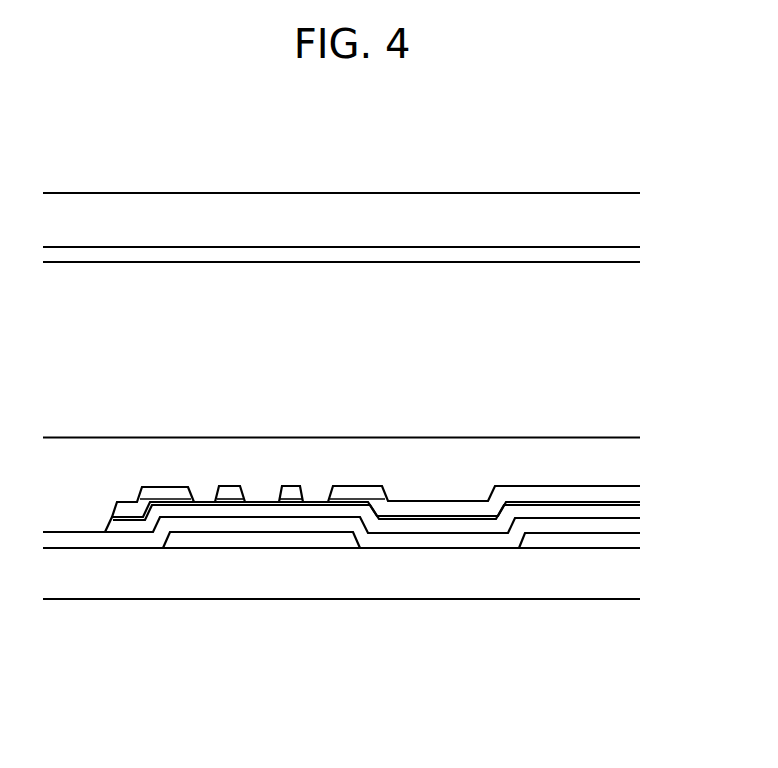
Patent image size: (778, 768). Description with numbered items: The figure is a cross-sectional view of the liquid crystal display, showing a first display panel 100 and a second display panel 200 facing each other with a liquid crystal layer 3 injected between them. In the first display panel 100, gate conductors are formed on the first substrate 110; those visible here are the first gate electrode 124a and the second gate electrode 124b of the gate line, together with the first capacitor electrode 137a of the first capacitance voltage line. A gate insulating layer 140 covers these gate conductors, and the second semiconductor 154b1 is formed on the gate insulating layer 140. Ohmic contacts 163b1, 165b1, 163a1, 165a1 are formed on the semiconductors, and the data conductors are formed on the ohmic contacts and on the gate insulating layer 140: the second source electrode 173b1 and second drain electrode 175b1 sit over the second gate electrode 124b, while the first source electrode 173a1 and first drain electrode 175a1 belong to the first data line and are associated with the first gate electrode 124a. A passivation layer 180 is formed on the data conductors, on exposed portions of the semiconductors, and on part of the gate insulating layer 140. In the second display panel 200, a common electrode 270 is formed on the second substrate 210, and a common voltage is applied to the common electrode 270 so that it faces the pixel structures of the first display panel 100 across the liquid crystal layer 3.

The liquid crystal layer 3 is at (651, 277).
The first display panel 100 is at (651, 487).
The first substrate 110 is at (605, 583).
The first gate electrode 124a is at (341, 540).
The second gate electrode 124b is at (183, 540).
The first capacitor electrode 137a is at (543, 541).
The gate insulating layer 140 is at (432, 538).
The second semiconductor 154b1 is at (225, 513).
The ohmic contact 163b1 is at (145, 487).
The ohmic contact 165b1 is at (246, 493).
The ohmic contact 163a1 is at (304, 490).
The ohmic contact 165a1 is at (367, 491).
The second source electrode 173b1 is at (168, 490).
The second drain electrode 175b1 is at (232, 490).
The first source electrode 173a1 is at (288, 491).
The first drain electrode 175a1 is at (563, 492).
The passivation layer 180 is at (462, 455).
The second display panel 200 is at (651, 193).
The second substrate 210 is at (528, 222).
The common electrode 270 is at (448, 257).